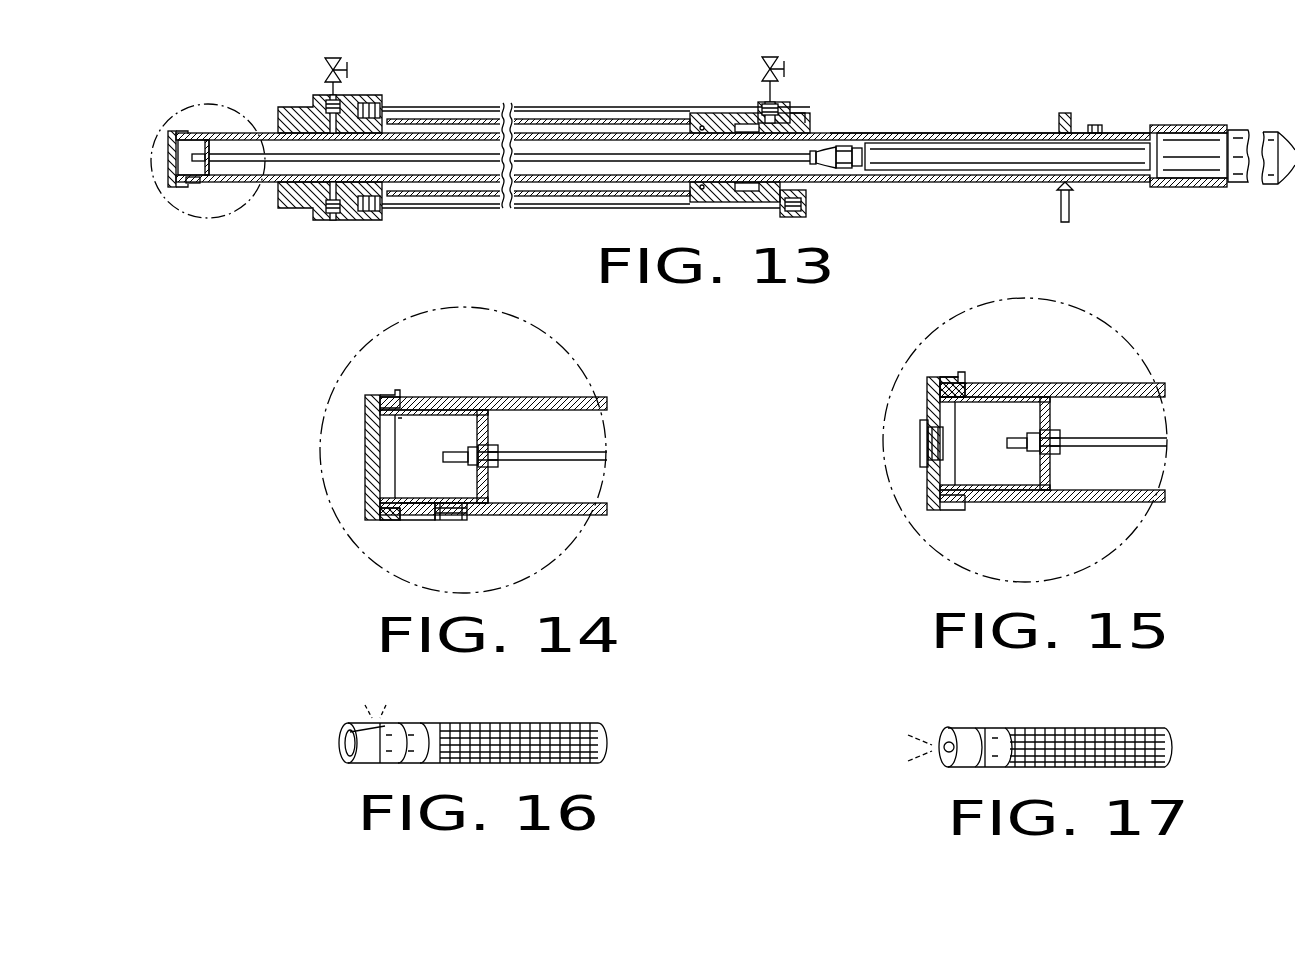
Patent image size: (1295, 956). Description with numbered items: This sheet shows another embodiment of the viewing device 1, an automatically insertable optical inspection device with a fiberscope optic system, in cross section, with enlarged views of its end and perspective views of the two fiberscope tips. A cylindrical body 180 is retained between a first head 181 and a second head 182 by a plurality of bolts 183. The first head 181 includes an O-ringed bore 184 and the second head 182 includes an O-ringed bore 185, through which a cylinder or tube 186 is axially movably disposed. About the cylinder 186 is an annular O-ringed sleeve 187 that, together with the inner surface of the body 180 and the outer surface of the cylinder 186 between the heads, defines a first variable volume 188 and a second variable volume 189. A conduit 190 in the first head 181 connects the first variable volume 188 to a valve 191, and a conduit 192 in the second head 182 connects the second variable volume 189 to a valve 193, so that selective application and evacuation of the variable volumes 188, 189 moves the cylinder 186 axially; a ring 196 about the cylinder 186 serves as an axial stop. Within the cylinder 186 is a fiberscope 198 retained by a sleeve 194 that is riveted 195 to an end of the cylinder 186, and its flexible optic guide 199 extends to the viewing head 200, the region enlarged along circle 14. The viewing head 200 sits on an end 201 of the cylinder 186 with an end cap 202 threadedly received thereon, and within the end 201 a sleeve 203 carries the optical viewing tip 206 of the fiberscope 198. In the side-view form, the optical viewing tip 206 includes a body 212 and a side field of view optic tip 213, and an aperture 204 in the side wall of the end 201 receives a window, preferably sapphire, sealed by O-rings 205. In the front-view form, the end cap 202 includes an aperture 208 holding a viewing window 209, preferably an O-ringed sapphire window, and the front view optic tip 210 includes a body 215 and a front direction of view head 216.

In FIG. 13, the viewing device 1 is at (607, 54).
In FIG. 13, the circle 14— 14 is at (152, 130).
In FIG. 13, the cylindrical body 180 is at (530, 116).
In FIG. 13, the first head 181 is at (808, 195).
In FIG. 13, the second head 182 is at (292, 206).
In FIG. 13, the bolts 183 is at (572, 209).
In FIG. 13, the O-ringed bore 184 is at (798, 112).
In FIG. 13, the O-ringed bore 185 is at (368, 101).
In FIG. 13, the cylinder or tube 186 is at (990, 131).
In FIG. 13, the O-ringed sleeve 187 is at (690, 122).
In FIG. 13, the first variable volume 188 is at (745, 120).
In FIG. 13, the second variable volume 189 is at (572, 127).
In FIG. 13, the conduit 190 is at (772, 100).
In FIG. 13, the valve 191 is at (782, 58).
In FIG. 13, the conduit 192 is at (331, 98).
In FIG. 13, the valve 193 is at (337, 45).
In FIG. 13, the sleeve 194 is at (1184, 126).
In FIG. 13, the rivet 195 is at (1096, 123).
In FIG. 13, the ring 196 is at (1068, 112).
In FIG. 13, the fiberscope 198 is at (1000, 165).
In FIG. 13, the flexible optic guide 199 is at (437, 165).
In FIG. 14, the flexible optic guide 199 is at (570, 455).
In FIG. 15, the flexible optic guide 199 is at (1130, 440).
In FIG. 13, the viewing head 200 is at (231, 74).
In FIG. 14, the viewing head 200 is at (302, 440).
In FIG. 15, the viewing head 200 is at (1165, 342).
In FIG. 14, the end 201 is at (521, 397).
In FIG. 15, the end 201 is at (1080, 384).
In FIG. 14, the end cap 202 is at (370, 394).
In FIG. 15, the end cap 202 is at (935, 377).
In FIG. 14, the sleeve 203 is at (428, 398).
In FIG. 15, the sleeve 203 is at (990, 397).
In FIG. 14, the aperture 204 is at (395, 518).
In FIG. 14, the O-rings 205 is at (432, 521).
In FIG. 14, the optical viewing tip 206 is at (490, 462).
In FIG. 16, the optical viewing tip 206 is at (612, 745).
In FIG. 15, the aperture 208 is at (925, 395).
In FIG. 15, the viewing window 209 is at (918, 442).
In FIG. 15, the front view optic tip 210 is at (1030, 452).
In FIG. 17, the front view optic tip 210 is at (1196, 748).
In FIG. 16, the body 212 is at (487, 732).
In FIG. 16, the side field of view optic tip 213 is at (352, 722).
In FIG. 17, the body 215 is at (1080, 734).
In FIG. 17, the front direction of view head 216 is at (928, 722).